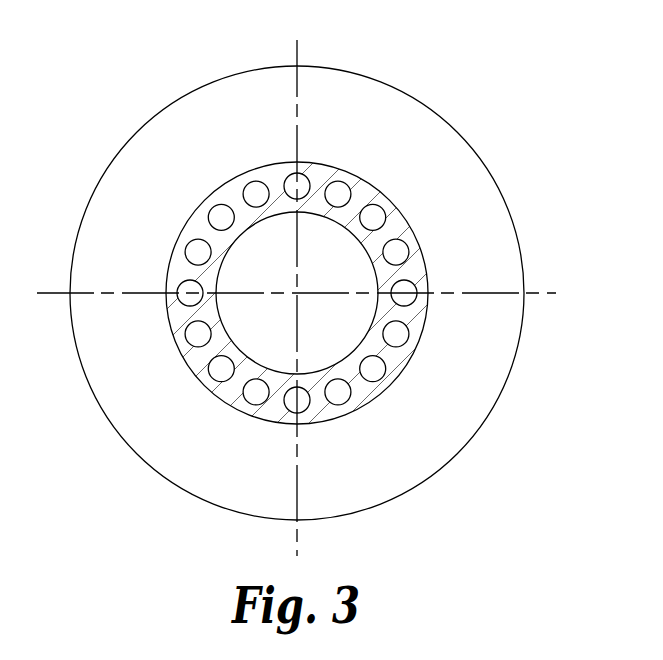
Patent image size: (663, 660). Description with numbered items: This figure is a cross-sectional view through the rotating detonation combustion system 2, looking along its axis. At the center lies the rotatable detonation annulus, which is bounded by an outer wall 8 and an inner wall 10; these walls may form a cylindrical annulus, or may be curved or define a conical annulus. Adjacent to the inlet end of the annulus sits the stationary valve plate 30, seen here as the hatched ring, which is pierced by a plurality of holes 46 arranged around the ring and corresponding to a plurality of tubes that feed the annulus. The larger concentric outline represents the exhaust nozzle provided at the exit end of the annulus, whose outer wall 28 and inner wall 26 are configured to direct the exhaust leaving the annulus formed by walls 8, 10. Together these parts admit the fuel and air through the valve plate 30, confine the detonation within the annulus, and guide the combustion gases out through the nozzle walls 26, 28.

The rotating detonation combustion system 2 is at (501, 87).
The outer wall 8 is at (361, 384).
The inner wall 10 is at (417, 237).
The inner wall 26 is at (413, 445).
The outer wall 28 is at (455, 453).
The stationary valve plate 30 is at (415, 352).
The holes 46 is at (244, 403).